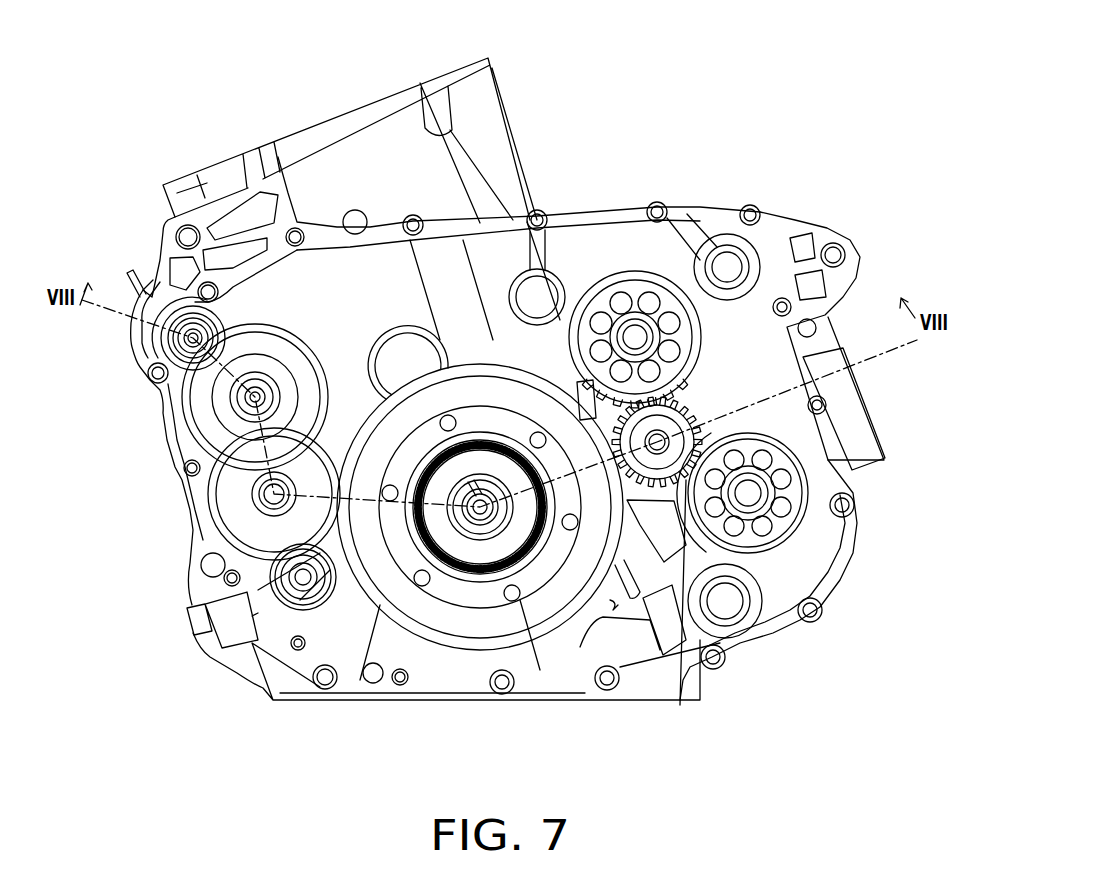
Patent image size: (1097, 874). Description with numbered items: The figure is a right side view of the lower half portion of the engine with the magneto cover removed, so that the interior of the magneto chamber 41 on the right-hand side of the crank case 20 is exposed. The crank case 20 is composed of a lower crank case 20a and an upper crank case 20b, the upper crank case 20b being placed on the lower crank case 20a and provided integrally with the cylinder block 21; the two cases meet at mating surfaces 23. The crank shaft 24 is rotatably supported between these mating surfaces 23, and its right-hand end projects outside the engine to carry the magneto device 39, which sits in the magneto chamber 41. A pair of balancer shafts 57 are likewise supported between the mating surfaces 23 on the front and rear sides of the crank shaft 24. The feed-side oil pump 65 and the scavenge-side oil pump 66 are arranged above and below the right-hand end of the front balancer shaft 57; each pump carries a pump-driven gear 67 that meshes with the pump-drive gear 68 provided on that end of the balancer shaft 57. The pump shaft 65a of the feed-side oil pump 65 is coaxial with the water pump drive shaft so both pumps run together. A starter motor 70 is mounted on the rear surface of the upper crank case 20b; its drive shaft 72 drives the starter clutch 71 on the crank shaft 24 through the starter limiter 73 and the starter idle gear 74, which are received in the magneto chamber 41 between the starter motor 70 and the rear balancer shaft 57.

The crank case 20 is at (710, 51).
The lower crank case 20a is at (833, 577).
The upper crank case 20b is at (707, 208).
The cylinder block 21 is at (482, 117).
The mating surfaces 23 is at (190, 620).
The crank shaft 24 is at (477, 527).
The magneto device 39 is at (435, 593).
The magneto chamber 41 is at (614, 612).
The balancer shaft 57 is at (303, 577).
The feed-side oil pump 65 is at (638, 283).
The pump shaft 65a is at (635, 337).
The scavenge-side oil pump 66 is at (787, 522).
The pump-driven gear 67 is at (686, 480).
The pump-drive gear 68 is at (683, 430).
The starter motor 70 is at (132, 347).
The starter clutch 71 is at (397, 600).
The drive shaft 72 is at (150, 378).
The starter limiter 73 is at (202, 435).
The starter idle gear 74 is at (227, 517).